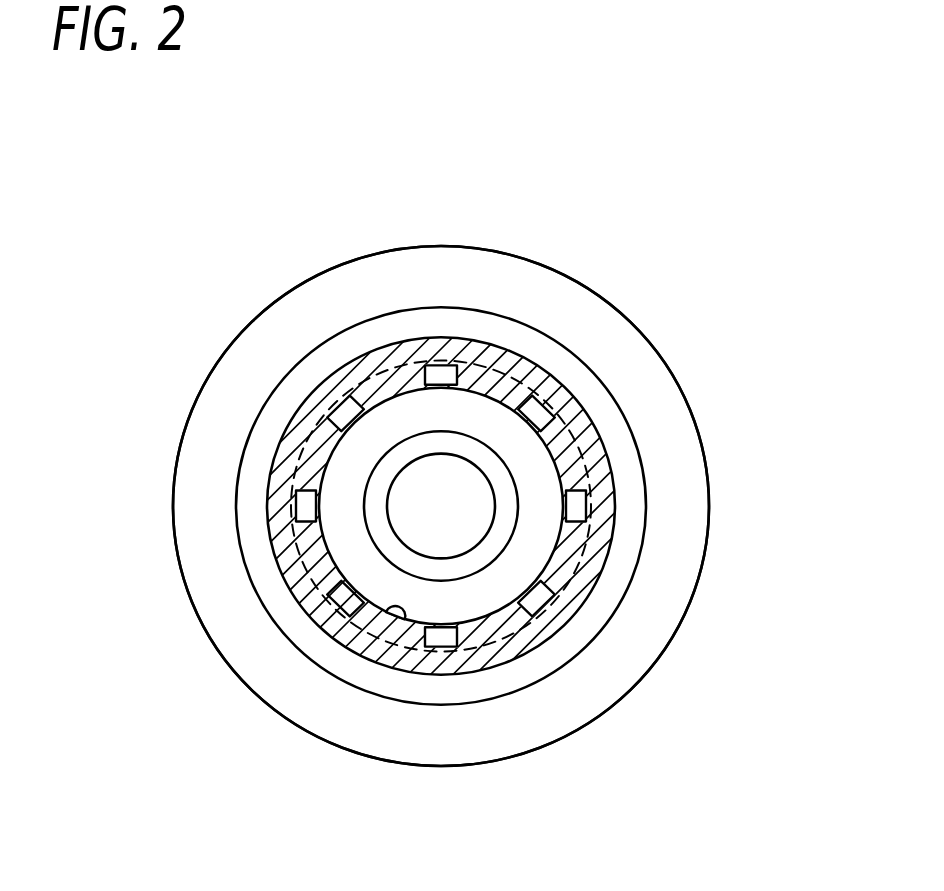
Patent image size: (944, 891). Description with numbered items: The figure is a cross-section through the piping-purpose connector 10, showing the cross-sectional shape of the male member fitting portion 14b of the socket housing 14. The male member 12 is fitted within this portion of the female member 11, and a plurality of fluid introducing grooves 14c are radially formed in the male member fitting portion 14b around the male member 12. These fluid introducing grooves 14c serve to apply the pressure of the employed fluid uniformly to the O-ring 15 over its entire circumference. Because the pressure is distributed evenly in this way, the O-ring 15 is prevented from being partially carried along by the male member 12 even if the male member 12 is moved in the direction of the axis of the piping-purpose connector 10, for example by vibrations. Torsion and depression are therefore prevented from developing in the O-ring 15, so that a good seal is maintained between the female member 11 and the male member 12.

The piping-purpose connector 10 is at (225, 218).
The female member 11 is at (563, 247).
The male member 12 is at (398, 412).
The socket housing 14 is at (627, 312).
The male member fitting portion 14b is at (365, 625).
The fluid introducing grooves 14c is at (548, 392).
The O-ring 15 is at (307, 437).